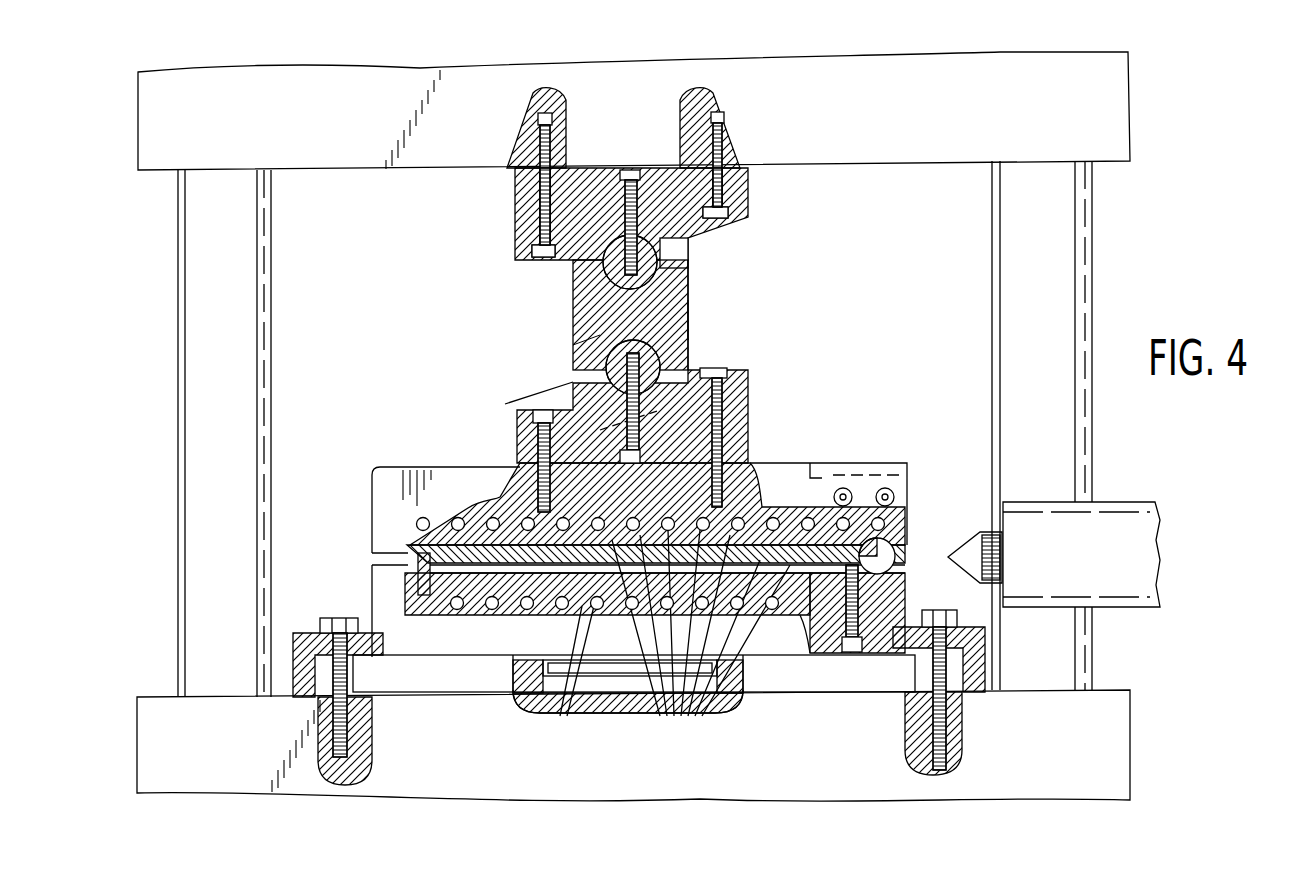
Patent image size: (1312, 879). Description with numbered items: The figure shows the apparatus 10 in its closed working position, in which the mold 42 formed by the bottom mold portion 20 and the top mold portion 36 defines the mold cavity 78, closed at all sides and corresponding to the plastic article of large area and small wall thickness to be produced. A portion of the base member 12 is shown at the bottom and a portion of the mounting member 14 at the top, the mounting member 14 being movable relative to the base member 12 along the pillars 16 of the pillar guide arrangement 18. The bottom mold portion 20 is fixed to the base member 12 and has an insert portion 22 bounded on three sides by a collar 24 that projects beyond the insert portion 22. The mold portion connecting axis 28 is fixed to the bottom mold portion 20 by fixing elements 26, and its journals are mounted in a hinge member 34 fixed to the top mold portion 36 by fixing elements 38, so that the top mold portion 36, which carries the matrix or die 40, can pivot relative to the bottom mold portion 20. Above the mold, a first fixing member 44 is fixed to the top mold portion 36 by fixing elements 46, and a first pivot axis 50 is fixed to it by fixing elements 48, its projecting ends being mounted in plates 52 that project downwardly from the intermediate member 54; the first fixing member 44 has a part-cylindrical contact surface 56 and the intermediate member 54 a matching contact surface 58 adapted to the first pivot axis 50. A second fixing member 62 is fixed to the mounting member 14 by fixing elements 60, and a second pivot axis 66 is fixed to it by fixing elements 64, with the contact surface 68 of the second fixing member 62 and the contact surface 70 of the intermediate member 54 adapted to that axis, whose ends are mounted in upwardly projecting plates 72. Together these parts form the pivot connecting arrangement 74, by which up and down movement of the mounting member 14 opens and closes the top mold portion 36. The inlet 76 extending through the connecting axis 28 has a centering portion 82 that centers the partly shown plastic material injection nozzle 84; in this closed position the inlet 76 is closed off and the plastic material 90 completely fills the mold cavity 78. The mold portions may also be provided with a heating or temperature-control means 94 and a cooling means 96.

The apparatus 10 is at (655, 423).
The base member 12 is at (1085, 726).
The mounting member 14 is at (1105, 102).
The pillars 16 is at (252, 299).
The pillar guide arrangement 18 is at (166, 345).
The bottom mold portion 20 is at (466, 636).
The insert portion 22 is at (497, 620).
The collar 24 is at (410, 578).
The fixing elements 26 is at (848, 645).
The mold portion connecting axis 28 is at (880, 540).
The hinge member 34 is at (853, 470).
The top mold portion 36 is at (437, 497).
The fixing elements 38 is at (852, 485).
The matrix or die 40 is at (428, 548).
The mold 42 is at (366, 462).
The first fixing member 44 is at (733, 410).
The fixing elements 46 is at (517, 443).
The fixing elements 48 is at (733, 376).
The first pivot axis 50 is at (682, 357).
The plates 52 is at (590, 373).
The intermediate member 54 is at (593, 333).
The part-cylindrical sliding or contact surface 56 is at (545, 400).
The part-cylindrical sliding or contact surface 58 is at (687, 322).
The fixing elements 60 is at (562, 150).
The second fixing member 62 is at (748, 205).
The fixing elements 64 is at (634, 168).
The second pivot axis 66 is at (573, 290).
The part-cylindrical contact surface 68 is at (690, 237).
The part-cylindrical sliding or contact surface 70 is at (688, 292).
The plates 72 is at (678, 258).
The pivot connecting arrangement 74 is at (594, 293).
The inlet 76 is at (820, 623).
The mold cavity 78 is at (565, 683).
The centering portion 82 is at (897, 580).
The plastic material injection nozzle 84 is at (1080, 537).
The plastic material 90 is at (587, 683).
The heating or temperature-control means 94 is at (656, 645).
The cooling means 96 is at (738, 647).